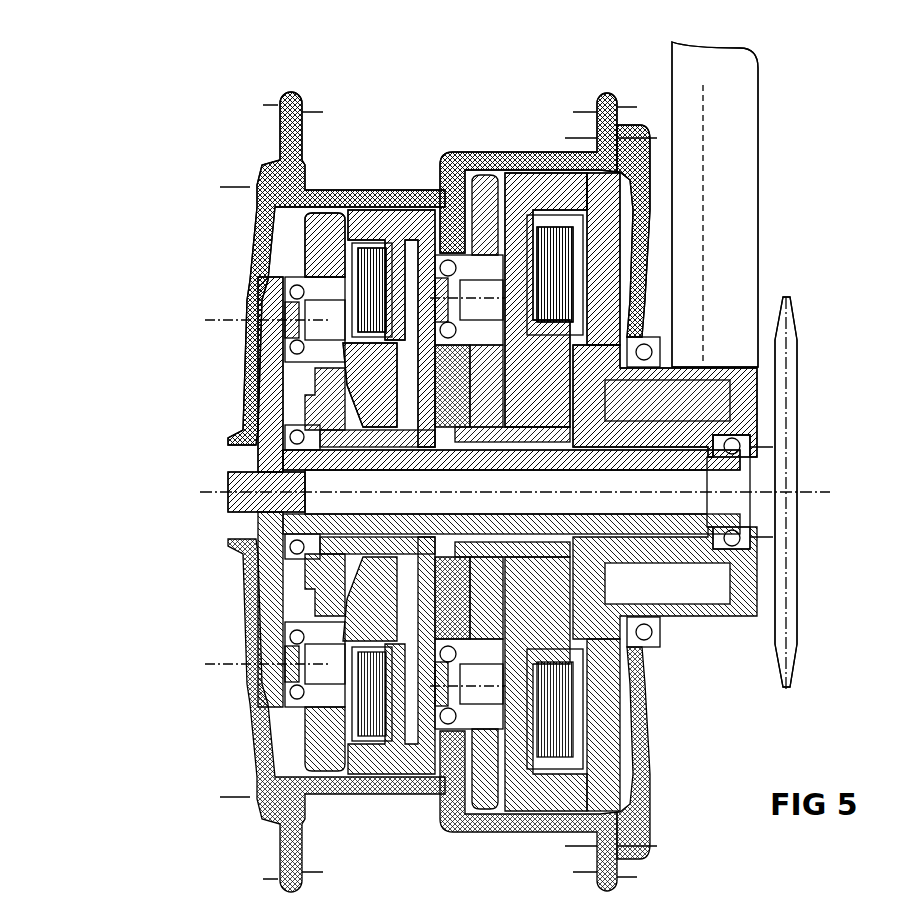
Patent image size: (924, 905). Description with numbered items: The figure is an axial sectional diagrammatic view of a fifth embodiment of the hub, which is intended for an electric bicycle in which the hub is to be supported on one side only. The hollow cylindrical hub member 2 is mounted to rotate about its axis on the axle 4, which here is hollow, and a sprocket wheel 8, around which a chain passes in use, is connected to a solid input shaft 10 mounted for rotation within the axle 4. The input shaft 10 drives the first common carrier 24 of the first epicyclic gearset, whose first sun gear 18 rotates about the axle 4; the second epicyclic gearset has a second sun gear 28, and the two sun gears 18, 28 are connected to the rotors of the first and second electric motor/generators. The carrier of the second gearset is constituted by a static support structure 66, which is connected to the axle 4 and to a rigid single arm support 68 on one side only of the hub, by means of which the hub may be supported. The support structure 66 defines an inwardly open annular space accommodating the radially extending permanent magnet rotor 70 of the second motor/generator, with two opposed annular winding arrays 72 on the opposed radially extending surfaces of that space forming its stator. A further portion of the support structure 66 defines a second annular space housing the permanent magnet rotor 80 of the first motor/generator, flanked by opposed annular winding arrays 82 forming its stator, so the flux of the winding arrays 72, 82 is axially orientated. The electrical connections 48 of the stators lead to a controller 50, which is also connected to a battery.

The hub member 2 is at (483, 158).
The axle 4 is at (673, 458).
The sprocket wheel 8 is at (785, 395).
The input shaft 10 is at (243, 482).
The first sun gear 18 is at (370, 385).
The first common carrier 24 is at (273, 372).
The second sun gear 28 is at (545, 363).
The electrical connections 48 is at (372, 233).
The controller 50 is at (665, 401).
The static support structure 66 is at (340, 352).
The rigid single arm support 68 is at (735, 137).
The permanent magnet rotor 70 is at (648, 237).
The annular winding arrays 72 is at (583, 283).
The permanent magnet rotor 80 is at (277, 245).
The annular winding arrays 82 is at (262, 205).